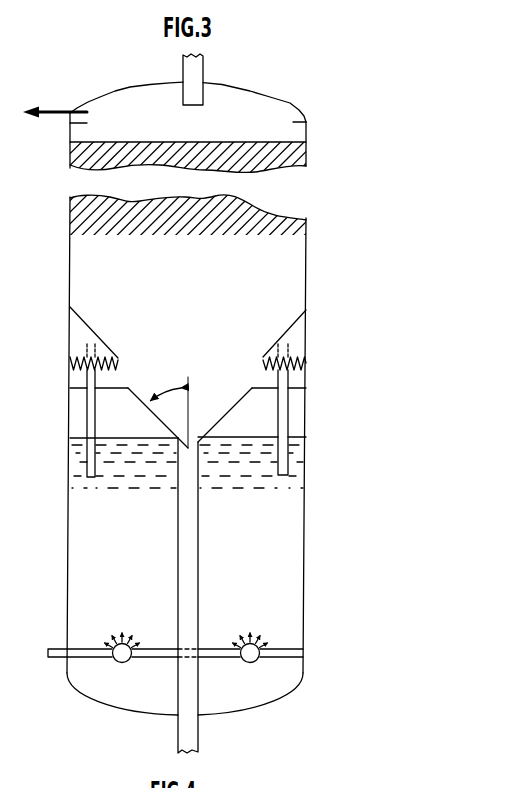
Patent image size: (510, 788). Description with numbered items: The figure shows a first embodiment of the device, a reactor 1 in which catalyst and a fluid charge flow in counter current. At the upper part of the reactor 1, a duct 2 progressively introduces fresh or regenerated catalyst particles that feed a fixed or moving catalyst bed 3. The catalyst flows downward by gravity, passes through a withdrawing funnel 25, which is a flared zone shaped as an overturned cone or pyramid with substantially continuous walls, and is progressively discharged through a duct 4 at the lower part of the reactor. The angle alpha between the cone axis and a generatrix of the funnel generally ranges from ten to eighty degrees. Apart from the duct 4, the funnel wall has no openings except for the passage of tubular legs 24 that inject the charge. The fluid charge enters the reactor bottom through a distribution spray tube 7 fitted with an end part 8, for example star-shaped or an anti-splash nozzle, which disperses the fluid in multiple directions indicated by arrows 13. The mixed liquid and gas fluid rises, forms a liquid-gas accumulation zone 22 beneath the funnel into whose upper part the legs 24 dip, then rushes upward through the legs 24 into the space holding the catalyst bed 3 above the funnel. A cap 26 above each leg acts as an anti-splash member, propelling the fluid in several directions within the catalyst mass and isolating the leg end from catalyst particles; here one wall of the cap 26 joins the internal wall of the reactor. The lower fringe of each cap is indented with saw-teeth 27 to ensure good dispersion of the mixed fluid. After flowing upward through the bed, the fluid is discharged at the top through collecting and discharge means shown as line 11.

The reactor 1 is at (105, 95).
The duct 2 is at (182, 70).
The catalyst bed 3 is at (81, 210).
The duct 4 is at (178, 736).
The distribution spray tube 7 is at (58, 660).
The end part 8 is at (122, 663).
The line 11 is at (60, 110).
The arrows 13 is at (263, 634).
The liquid-gas accumulation zone 22 is at (296, 456).
The legs 24 is at (70, 386).
The withdrawing funnel 25 is at (232, 409).
The cap 26 is at (80, 324).
The saw-teeth 27 is at (72, 364).